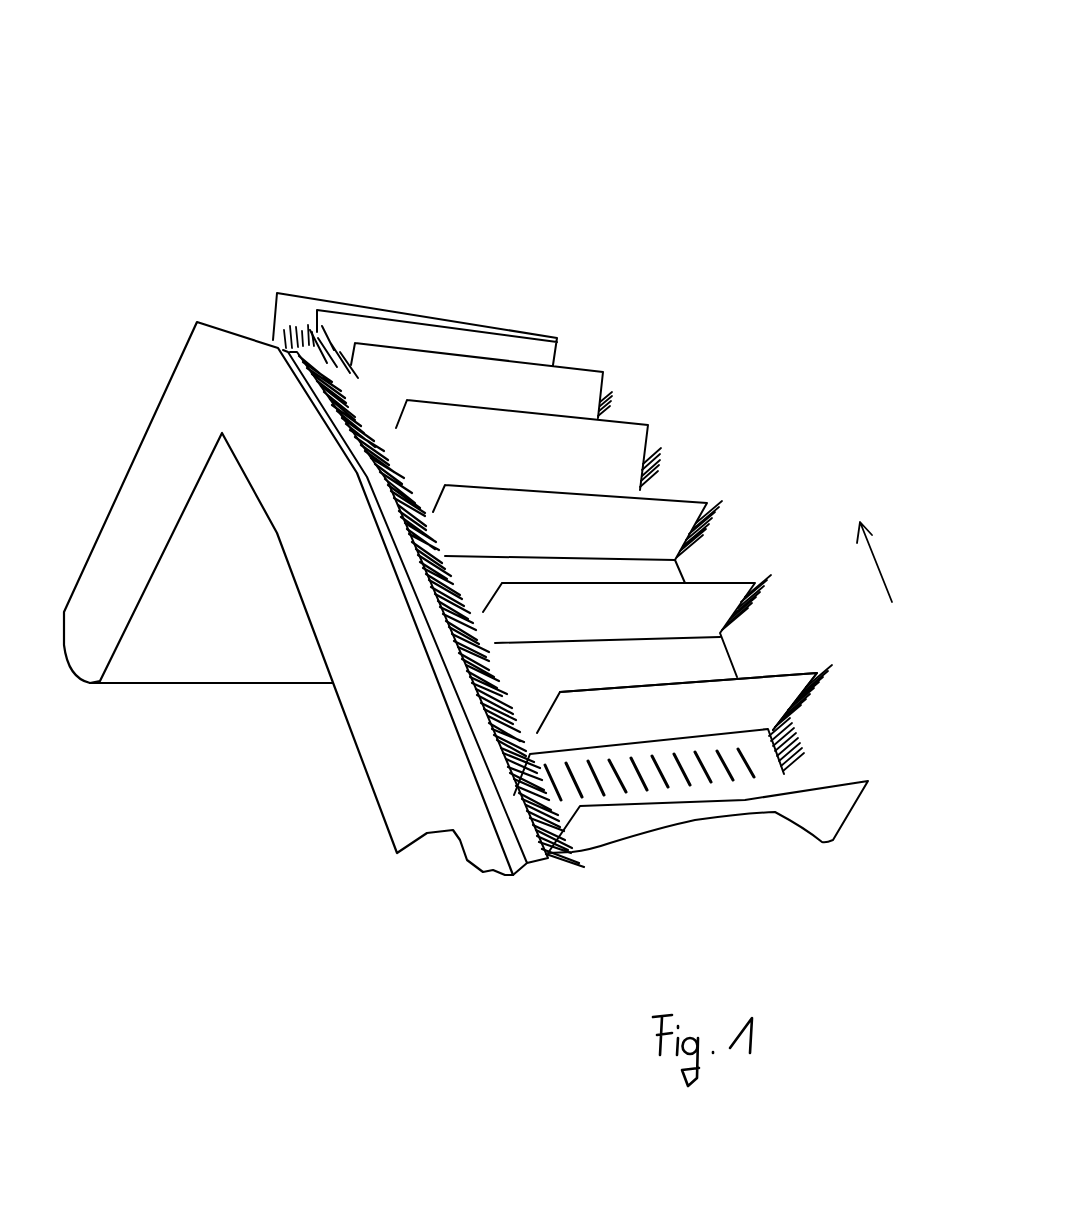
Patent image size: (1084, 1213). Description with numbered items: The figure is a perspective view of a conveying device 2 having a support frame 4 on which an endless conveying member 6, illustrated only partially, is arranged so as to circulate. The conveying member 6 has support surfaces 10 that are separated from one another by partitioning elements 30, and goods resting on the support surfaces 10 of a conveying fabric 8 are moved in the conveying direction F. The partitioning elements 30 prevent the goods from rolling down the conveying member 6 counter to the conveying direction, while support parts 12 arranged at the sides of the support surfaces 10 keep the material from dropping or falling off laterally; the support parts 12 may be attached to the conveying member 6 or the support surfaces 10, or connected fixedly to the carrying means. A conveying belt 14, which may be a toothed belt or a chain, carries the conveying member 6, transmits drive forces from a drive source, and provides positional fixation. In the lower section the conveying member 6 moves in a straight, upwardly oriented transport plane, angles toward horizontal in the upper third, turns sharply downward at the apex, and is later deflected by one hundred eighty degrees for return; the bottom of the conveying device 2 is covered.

The conveying device 2 is at (453, 218).
The support frame 4 is at (383, 735).
The conveying member 6 is at (690, 855).
The conveying fabric 8 is at (697, 663).
The support surfaces 10 is at (780, 763).
The support parts 12 is at (478, 679).
The conveying belt 14 is at (521, 838).
The partitioning elements 30 is at (552, 388).